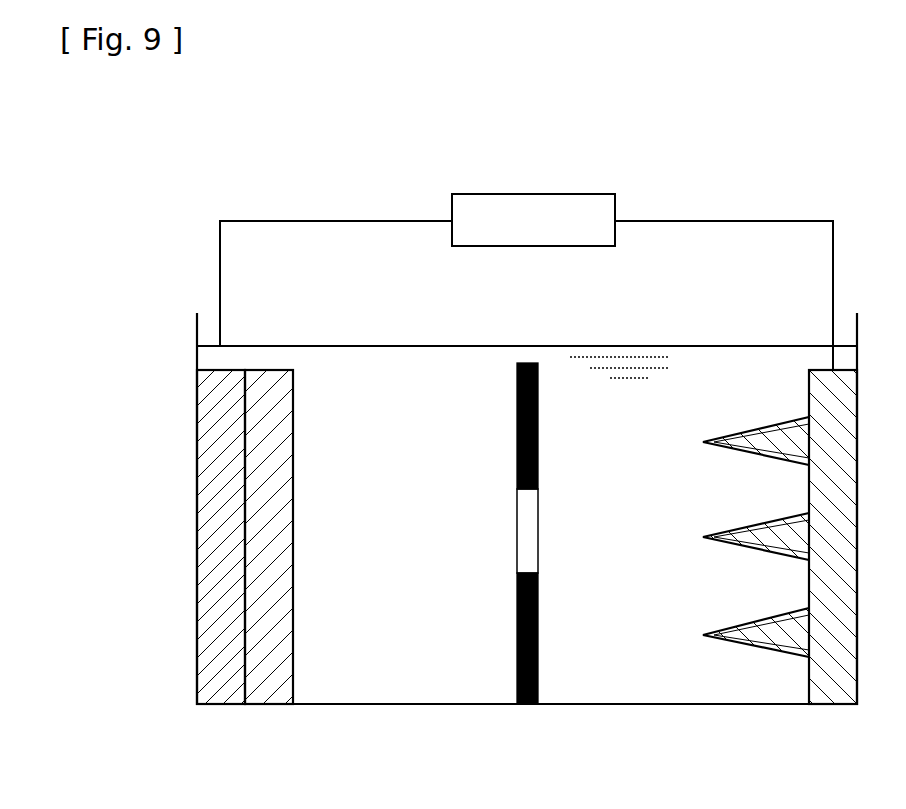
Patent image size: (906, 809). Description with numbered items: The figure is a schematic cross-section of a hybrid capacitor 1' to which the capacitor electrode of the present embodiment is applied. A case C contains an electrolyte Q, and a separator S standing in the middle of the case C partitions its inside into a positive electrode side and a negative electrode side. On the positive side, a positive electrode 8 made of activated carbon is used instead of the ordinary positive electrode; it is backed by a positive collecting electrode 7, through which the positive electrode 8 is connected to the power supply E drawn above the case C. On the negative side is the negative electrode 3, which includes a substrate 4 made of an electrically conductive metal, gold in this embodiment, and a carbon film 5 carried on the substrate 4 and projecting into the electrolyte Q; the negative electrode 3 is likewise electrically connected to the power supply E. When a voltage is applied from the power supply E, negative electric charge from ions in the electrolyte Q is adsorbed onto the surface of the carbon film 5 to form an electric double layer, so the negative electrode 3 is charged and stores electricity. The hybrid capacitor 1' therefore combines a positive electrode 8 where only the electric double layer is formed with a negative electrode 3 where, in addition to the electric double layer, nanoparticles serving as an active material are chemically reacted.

The hybrid capacitor 1' is at (474, 260).
The power supply E is at (543, 233).
The case C is at (315, 706).
The negative electrode 3 is at (745, 360).
The electrolyte Q is at (590, 428).
The positive collecting electrode 7 is at (216, 706).
The positive electrode 8 is at (266, 706).
The separator S is at (525, 706).
The substrate 4 is at (826, 706).
The carbon film 5 is at (755, 427).